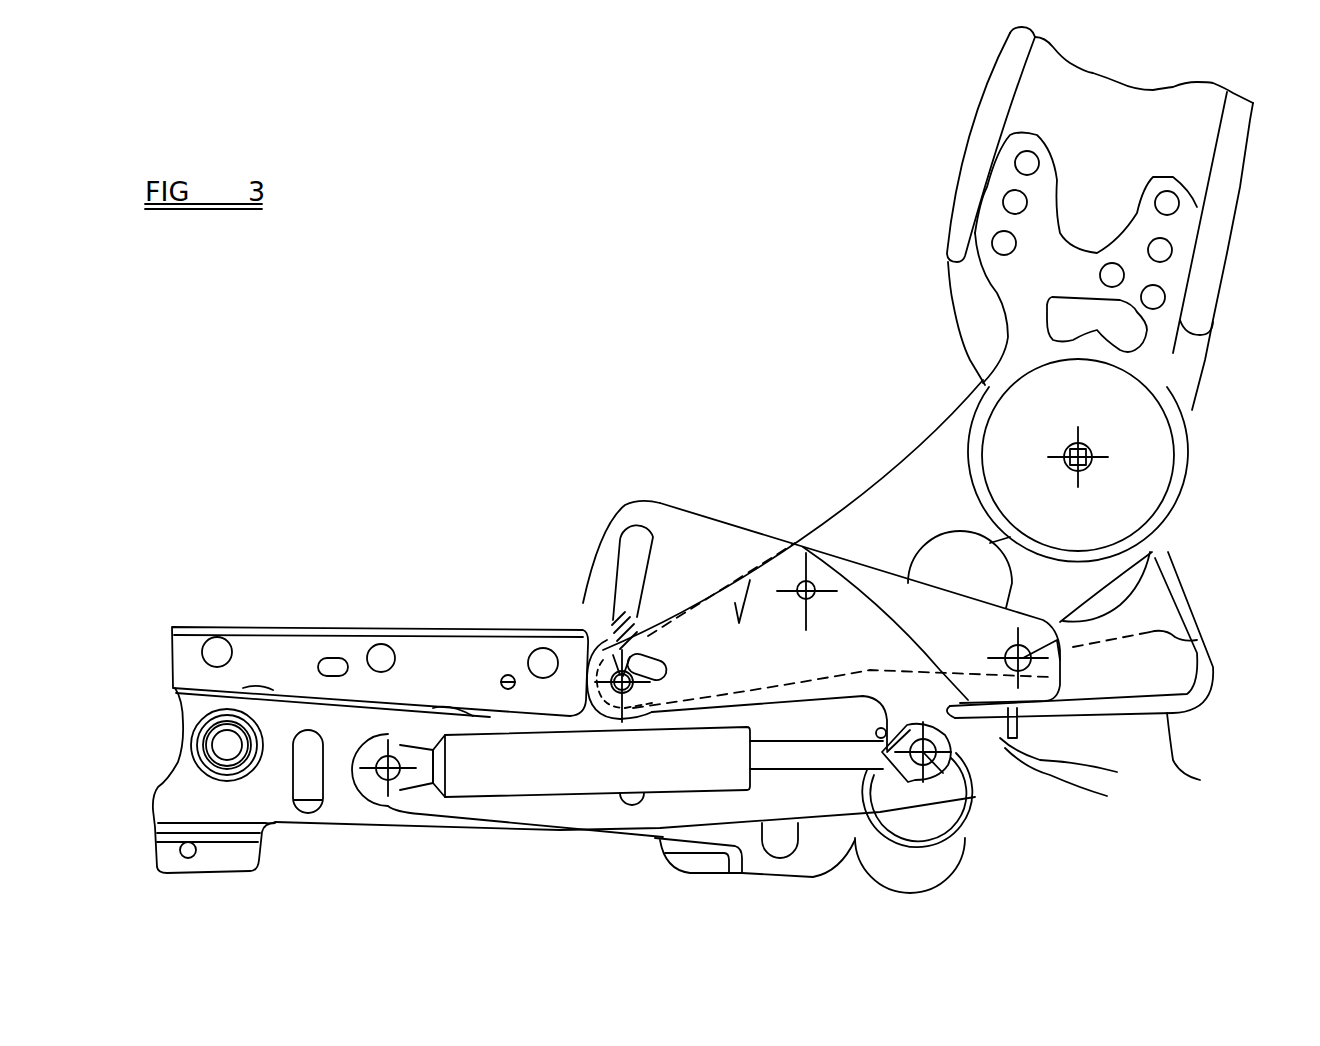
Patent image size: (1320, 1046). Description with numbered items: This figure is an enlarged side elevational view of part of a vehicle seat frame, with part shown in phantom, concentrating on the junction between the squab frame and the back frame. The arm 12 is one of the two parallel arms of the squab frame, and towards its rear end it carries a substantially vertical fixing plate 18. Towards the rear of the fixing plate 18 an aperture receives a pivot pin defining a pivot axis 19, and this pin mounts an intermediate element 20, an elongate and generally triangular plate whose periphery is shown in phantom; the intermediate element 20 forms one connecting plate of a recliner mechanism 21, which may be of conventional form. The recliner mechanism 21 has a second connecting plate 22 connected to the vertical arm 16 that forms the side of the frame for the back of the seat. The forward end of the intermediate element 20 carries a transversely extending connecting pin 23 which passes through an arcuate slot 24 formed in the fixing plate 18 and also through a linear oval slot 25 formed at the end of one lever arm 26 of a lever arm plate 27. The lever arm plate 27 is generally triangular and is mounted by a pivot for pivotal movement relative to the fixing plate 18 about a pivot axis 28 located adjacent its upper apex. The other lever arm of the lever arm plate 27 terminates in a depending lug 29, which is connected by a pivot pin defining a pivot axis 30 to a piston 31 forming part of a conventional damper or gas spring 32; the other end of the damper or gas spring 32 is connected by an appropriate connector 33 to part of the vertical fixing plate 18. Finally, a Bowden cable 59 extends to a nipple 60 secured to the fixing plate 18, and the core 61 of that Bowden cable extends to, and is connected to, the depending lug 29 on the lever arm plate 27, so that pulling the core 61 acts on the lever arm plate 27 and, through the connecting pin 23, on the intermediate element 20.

The arm 12 is at (317, 648).
The vertical arm 16 is at (1244, 174).
The fixing plate 18 is at (710, 540).
The pivot axis 19 is at (1200, 638).
The intermediate element 20 is at (902, 497).
The recliner mechanism 21 is at (1150, 467).
The second connecting plate 22 is at (1180, 233).
The connecting pin 23 is at (616, 672).
The arcuate slot 24 is at (605, 525).
The linear oval slot 25 is at (652, 714).
The lever arm 26 is at (690, 645).
The lever arm plate 27 is at (750, 580).
The pivot axis 28 is at (806, 590).
The depending lug 29 is at (960, 713).
The pivot axis 30 is at (940, 785).
The piston 31 is at (820, 758).
The damper or gas spring 32 is at (683, 760).
The connector 33 is at (390, 780).
The Bowden cable 59 is at (1200, 780).
The nipple 60 is at (1117, 772).
The core 61 is at (1105, 795).